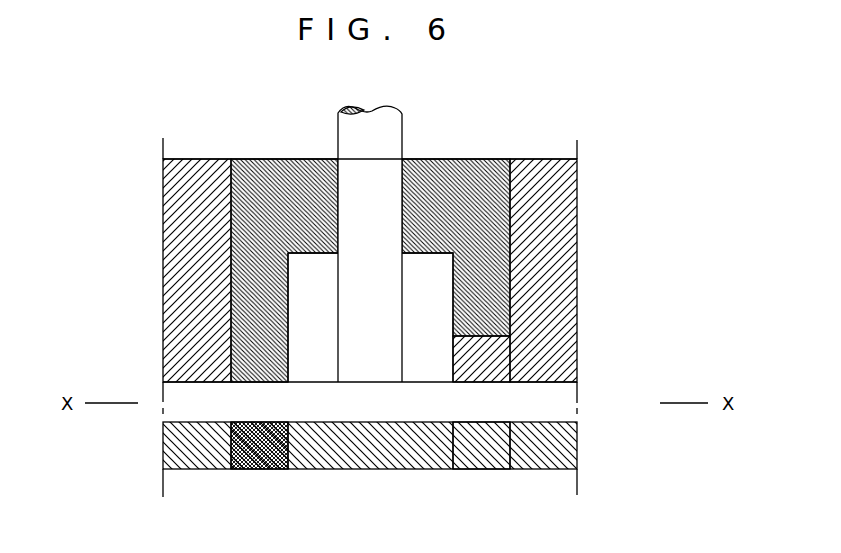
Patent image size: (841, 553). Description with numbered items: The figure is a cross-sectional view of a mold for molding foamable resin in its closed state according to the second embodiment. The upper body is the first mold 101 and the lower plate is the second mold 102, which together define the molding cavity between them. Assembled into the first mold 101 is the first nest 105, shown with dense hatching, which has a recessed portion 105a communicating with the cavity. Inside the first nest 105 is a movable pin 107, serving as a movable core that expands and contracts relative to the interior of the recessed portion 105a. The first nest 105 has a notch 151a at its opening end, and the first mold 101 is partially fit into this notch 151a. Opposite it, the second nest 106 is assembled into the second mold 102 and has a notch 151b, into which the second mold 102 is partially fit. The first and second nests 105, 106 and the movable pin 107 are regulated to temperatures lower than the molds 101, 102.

The first mold 101 is at (577, 247).
The second mold 102 is at (573, 440).
The first nest 105 is at (452, 159).
The recessed portion 105a is at (290, 284).
The second nest 106 is at (257, 469).
The movable pin 107 is at (356, 147).
The notch 151a is at (510, 351).
The notch 151b is at (485, 469).